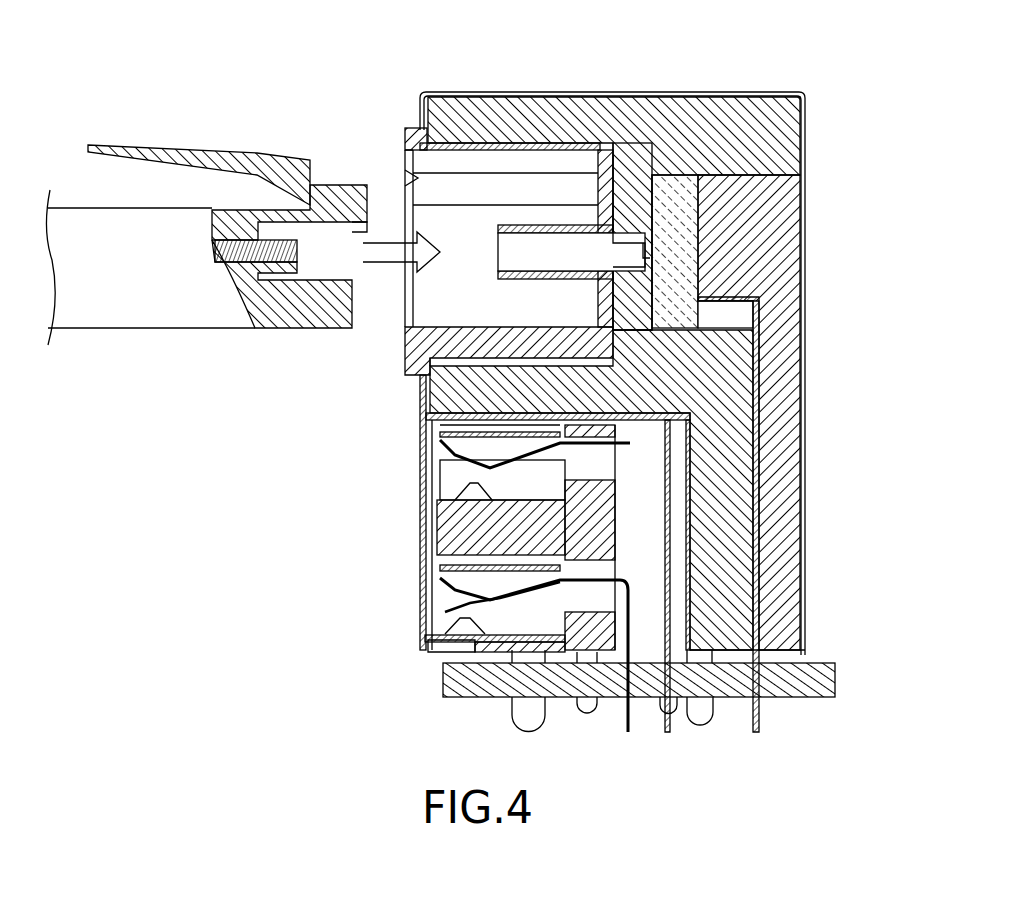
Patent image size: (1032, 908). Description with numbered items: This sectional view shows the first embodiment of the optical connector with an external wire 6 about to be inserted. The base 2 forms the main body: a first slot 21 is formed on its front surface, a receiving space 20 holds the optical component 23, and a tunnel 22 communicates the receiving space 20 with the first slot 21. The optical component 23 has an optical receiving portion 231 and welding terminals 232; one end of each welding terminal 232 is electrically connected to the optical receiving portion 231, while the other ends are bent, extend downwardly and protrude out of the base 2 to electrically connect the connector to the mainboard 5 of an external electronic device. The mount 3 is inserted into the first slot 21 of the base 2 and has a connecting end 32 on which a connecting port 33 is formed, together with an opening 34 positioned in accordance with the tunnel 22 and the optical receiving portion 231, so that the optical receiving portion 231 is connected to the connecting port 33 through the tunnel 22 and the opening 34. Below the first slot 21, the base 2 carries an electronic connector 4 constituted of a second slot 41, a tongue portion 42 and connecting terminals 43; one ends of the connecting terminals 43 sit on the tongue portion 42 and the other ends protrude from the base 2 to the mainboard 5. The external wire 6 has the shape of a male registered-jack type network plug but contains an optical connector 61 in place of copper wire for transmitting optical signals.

The base 2 is at (699, 82).
The receiving space 20 is at (718, 318).
The first slot 21 is at (492, 93).
The tunnel 22 is at (560, 238).
The optical component 23 is at (700, 212).
The optical receiving portion 231 is at (639, 142).
The welding terminals 232 is at (763, 708).
The mount 3 is at (398, 352).
The connecting end 32 is at (404, 136).
The connecting port 33 is at (416, 183).
The opening 34 is at (577, 142).
The electronic connector 4 is at (335, 547).
The second slot 41 is at (434, 600).
The tongue portion 42 is at (432, 582).
The connecting terminals 43 is at (432, 628).
The mainboard 5 is at (470, 688).
The external wire 6 is at (172, 318).
The optical connector 61 is at (297, 256).